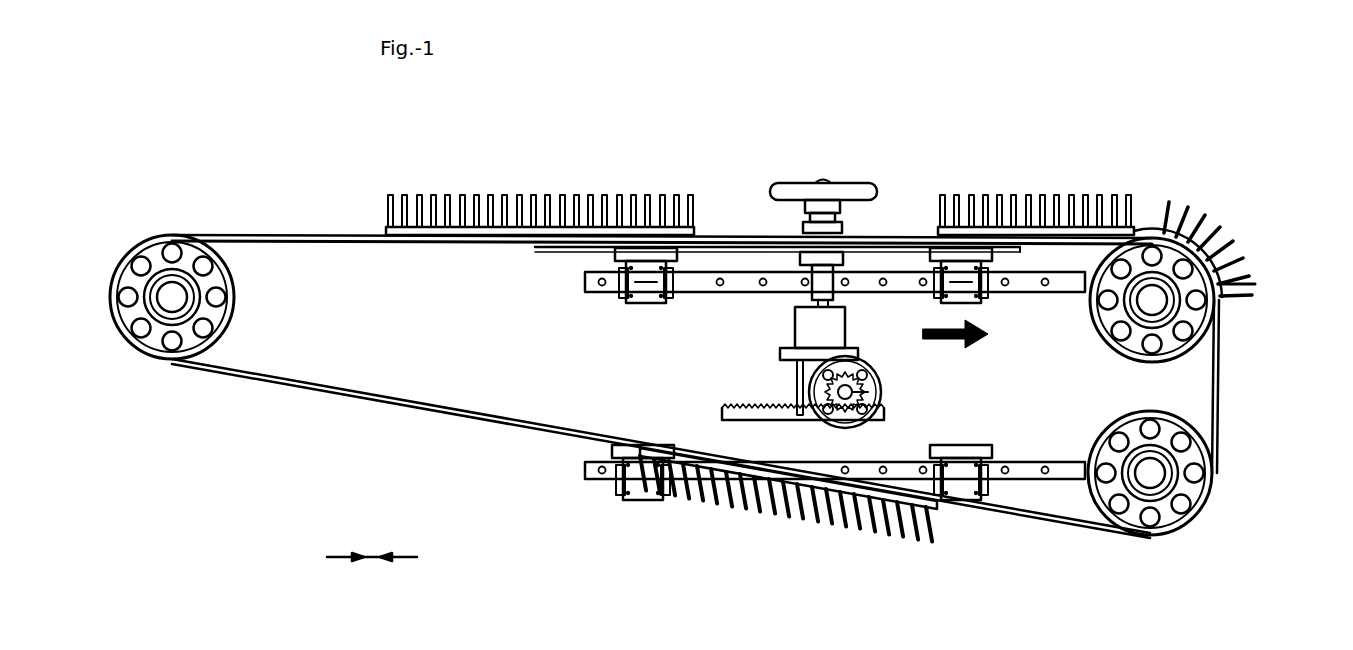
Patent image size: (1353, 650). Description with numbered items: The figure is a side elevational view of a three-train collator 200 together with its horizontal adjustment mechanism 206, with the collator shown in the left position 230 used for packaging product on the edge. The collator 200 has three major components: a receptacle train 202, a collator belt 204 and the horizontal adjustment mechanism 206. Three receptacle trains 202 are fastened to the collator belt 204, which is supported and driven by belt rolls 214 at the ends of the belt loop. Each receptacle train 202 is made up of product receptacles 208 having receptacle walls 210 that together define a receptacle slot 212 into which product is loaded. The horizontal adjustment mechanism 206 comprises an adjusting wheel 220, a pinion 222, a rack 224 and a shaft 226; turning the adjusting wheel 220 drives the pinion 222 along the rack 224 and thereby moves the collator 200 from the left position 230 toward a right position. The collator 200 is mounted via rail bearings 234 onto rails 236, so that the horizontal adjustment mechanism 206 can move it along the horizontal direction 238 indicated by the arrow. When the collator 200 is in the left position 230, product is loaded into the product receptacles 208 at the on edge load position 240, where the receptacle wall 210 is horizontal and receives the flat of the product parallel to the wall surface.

The collator 200 is at (852, 148).
The receptacle train 202 is at (826, 351).
The collator belt 204 is at (340, 392).
The horizontal adjustment mechanism 206 is at (854, 194).
The product receptacle 208 is at (435, 195).
The receptacle wall 210 is at (700, 215).
The receptacle slot 212 is at (540, 195).
The belt roll 214 is at (165, 350).
The adjusting wheel 220 is at (880, 190).
The pinion 222 is at (880, 400).
The rack 224 is at (735, 407).
The shaft 226 is at (833, 300).
The left position 230 is at (945, 548).
The rail bearing 234 is at (625, 300).
The rail 236 is at (740, 292).
The horizontal direction 238 is at (375, 557).
The on edge load position 240 is at (1252, 283).